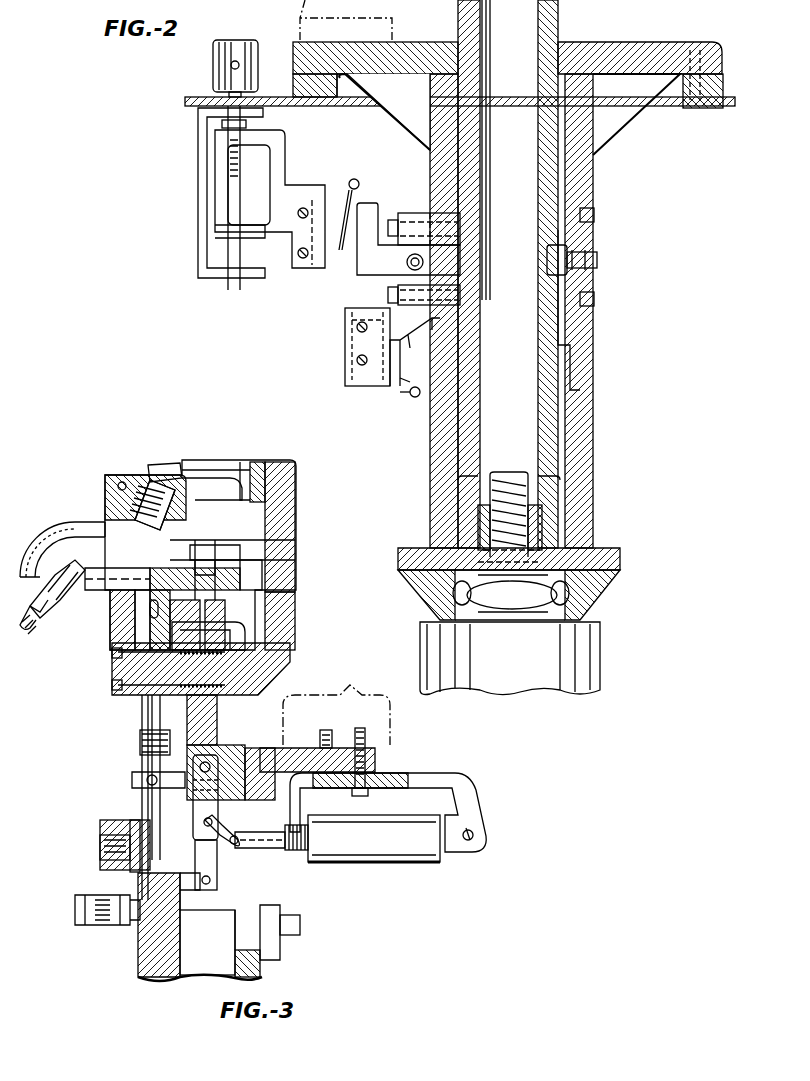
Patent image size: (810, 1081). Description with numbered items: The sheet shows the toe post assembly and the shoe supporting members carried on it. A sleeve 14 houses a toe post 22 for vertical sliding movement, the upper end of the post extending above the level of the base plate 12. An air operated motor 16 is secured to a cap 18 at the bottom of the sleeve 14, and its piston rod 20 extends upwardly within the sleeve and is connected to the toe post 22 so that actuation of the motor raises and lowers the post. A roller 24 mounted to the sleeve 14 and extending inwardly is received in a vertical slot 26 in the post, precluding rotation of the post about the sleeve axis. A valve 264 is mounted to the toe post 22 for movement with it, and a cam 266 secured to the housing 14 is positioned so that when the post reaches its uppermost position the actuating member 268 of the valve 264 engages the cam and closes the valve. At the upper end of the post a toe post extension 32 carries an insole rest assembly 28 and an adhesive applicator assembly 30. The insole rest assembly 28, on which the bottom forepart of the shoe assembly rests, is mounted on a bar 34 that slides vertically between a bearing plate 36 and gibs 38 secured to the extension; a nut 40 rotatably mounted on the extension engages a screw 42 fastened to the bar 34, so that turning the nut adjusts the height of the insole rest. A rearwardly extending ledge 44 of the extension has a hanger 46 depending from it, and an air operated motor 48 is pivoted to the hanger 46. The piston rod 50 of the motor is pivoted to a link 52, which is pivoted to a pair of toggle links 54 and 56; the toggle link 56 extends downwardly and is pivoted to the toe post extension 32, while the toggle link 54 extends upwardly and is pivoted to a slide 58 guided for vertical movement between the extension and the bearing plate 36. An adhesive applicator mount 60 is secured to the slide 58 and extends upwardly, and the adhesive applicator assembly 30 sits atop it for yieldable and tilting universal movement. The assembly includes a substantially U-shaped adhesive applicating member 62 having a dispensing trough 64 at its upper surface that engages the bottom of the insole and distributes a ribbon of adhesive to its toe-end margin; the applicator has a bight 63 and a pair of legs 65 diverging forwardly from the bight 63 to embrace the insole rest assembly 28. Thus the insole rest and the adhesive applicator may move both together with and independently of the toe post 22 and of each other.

In FIG. 2, the base plate 12 is at (596, 52).
In FIG. 2, the sleeve 14 is at (572, 398).
In FIG. 2, the air operated motor 16 is at (504, 684).
In FIG. 2, the cap 18 is at (590, 590).
In FIG. 2, the piston rod 20 is at (505, 612).
In FIG. 2, the toe post 22 is at (556, 28).
In FIG. 2, the roller 24 is at (548, 252).
In FIG. 2, the vertical slot 26 is at (558, 328).
In FIG. 3, the insole rest assembly 28 is at (160, 470).
In FIG. 3, the adhesive applicator assembly 30 is at (300, 440).
In FIG. 3, the toe post extension 32 is at (250, 748).
In FIG. 3, the bar 34 is at (178, 592).
In FIG. 3, the bearing plate 36 is at (190, 636).
In FIG. 3, the gibs 38 is at (145, 708).
In FIG. 3, the nut 40 is at (140, 778).
In FIG. 3, the screw 42 is at (150, 748).
In FIG. 3, the ledge 44 is at (285, 758).
In FIG. 3, the hanger 46 is at (462, 790).
In FIG. 3, the air operated motor 48 is at (375, 852).
In FIG. 3, the piston rod 50 is at (300, 852).
In FIG. 3, the link 52 is at (218, 822).
In FIG. 3, the toggle link 54 is at (210, 786).
In FIG. 3, the toggle link 56 is at (212, 880).
In FIG. 3, the slide 58 is at (215, 730).
In FIG. 3, the adhesive applicator mount 60 is at (270, 666).
In FIG. 3, the adhesive applicating member 62 is at (290, 486).
In FIG. 3, the bight 63 is at (296, 470).
In FIG. 3, the dispensing trough 64 is at (292, 460).
In FIG. 3, the legs 65 is at (238, 470).
In FIG. 2, the valve 264 is at (346, 347).
In FIG. 2, the cam 266 is at (416, 336).
In FIG. 2, the actuating member 268 is at (414, 398).